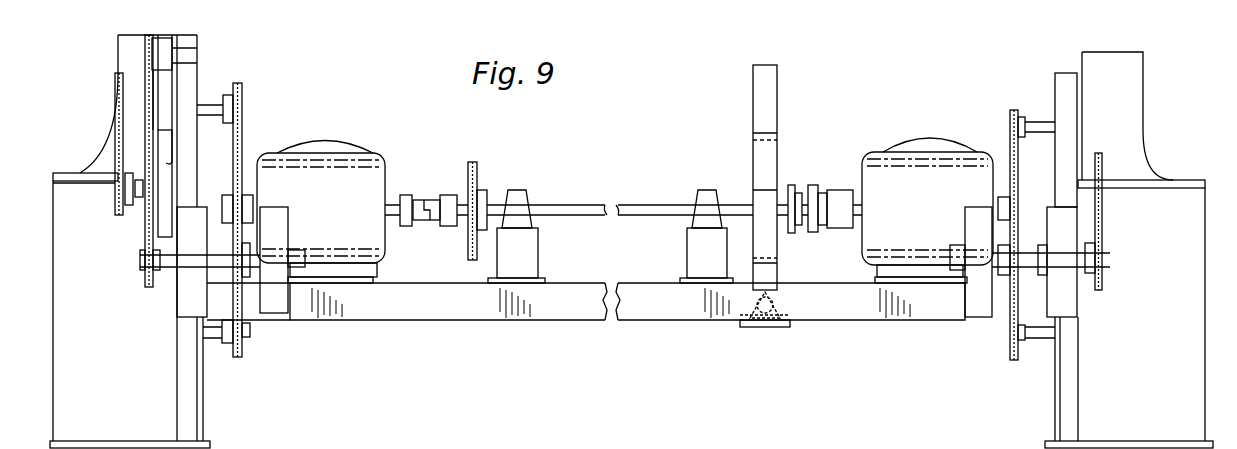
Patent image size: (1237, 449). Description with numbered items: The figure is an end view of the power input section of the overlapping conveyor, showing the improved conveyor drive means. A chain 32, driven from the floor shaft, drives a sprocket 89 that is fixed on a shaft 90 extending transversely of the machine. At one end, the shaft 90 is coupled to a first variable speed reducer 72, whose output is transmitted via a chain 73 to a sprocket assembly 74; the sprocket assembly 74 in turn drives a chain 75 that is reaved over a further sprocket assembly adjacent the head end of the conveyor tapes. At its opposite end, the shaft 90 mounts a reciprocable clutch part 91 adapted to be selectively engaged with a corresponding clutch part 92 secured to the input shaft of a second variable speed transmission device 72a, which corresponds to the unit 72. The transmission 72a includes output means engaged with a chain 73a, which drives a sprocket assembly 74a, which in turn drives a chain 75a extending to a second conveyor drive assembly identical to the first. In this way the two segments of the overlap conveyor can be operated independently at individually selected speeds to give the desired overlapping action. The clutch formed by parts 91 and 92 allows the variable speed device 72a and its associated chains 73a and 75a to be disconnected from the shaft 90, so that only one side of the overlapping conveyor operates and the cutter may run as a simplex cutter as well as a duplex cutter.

The chain 32 is at (474, 166).
The variable speed reducer 72 is at (348, 165).
The second variable speed transmission device 72a is at (872, 165).
The chain 73 is at (240, 142).
The chain 73a is at (1010, 150).
The sprocket assembly 74 is at (168, 258).
The sprocket assembly 74a is at (1103, 262).
The chain 75 is at (145, 232).
The chain 75a is at (1103, 218).
The sprocket 89 is at (480, 186).
The shaft 90 is at (580, 205).
The reciprocable clutch part 91 is at (780, 196).
The clutch part 92 is at (819, 187).